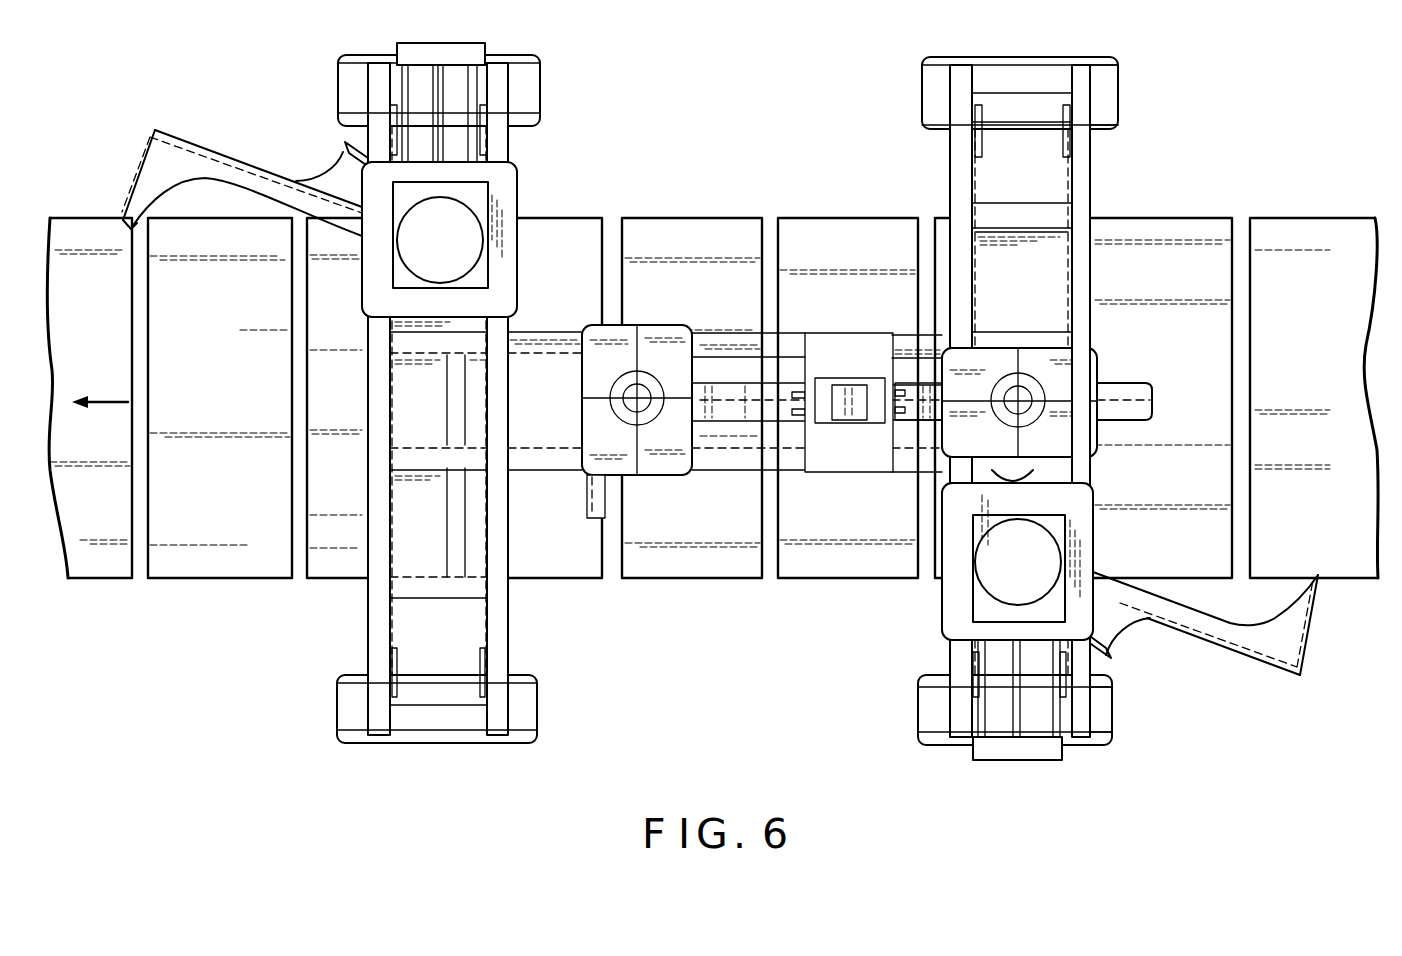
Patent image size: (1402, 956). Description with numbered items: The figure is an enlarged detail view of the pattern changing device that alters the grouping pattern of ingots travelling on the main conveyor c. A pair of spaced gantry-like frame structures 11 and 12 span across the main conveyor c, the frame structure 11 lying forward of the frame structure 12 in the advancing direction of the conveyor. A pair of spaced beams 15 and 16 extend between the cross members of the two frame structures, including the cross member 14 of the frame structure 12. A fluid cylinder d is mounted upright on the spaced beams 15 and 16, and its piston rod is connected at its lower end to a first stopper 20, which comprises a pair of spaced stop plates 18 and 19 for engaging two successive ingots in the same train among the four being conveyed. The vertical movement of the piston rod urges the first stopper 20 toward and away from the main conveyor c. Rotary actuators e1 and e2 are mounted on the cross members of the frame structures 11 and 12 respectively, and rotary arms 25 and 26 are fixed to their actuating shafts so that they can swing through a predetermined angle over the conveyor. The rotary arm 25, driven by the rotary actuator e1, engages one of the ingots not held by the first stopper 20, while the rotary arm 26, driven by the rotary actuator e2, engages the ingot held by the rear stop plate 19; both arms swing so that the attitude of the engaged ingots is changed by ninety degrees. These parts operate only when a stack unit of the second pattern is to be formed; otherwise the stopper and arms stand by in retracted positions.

The gantry-like frame structure 11 is at (462, 397).
The gantry-like frame structure 12 is at (1051, 408).
The cross member 14 is at (1108, 401).
The beam 15 is at (666, 486).
The beam 16 is at (731, 380).
The stop plate 18 is at (578, 517).
The rear stop plate 19 is at (1070, 468).
The first stopper 20 is at (817, 445).
The rotary arm 25 is at (245, 171).
The rotary arm 26 is at (1202, 638).
The main conveyor c is at (712, 432).
The fluid cylinder d is at (849, 420).
The rotary actuator e1 is at (466, 239).
The rotary actuator e2 is at (993, 565).